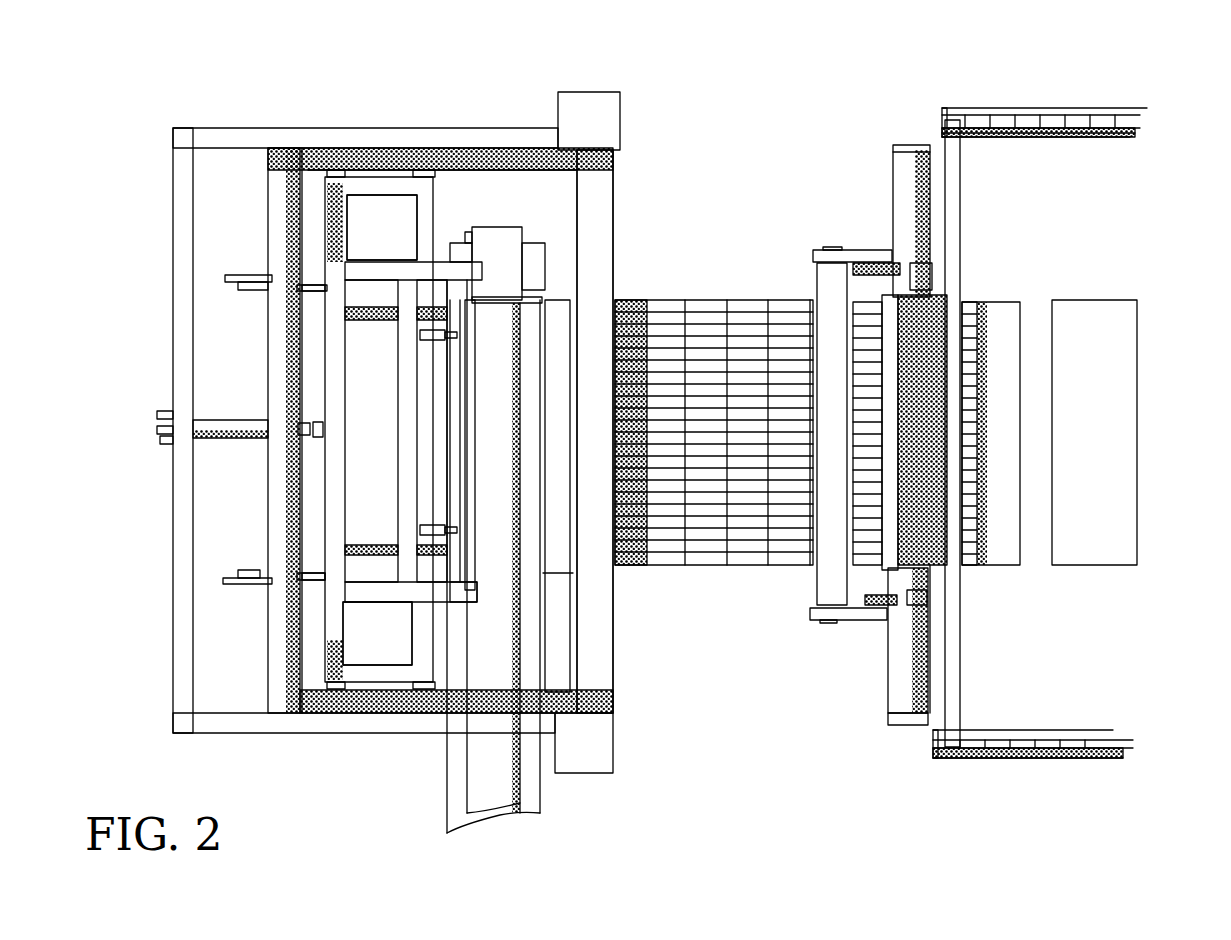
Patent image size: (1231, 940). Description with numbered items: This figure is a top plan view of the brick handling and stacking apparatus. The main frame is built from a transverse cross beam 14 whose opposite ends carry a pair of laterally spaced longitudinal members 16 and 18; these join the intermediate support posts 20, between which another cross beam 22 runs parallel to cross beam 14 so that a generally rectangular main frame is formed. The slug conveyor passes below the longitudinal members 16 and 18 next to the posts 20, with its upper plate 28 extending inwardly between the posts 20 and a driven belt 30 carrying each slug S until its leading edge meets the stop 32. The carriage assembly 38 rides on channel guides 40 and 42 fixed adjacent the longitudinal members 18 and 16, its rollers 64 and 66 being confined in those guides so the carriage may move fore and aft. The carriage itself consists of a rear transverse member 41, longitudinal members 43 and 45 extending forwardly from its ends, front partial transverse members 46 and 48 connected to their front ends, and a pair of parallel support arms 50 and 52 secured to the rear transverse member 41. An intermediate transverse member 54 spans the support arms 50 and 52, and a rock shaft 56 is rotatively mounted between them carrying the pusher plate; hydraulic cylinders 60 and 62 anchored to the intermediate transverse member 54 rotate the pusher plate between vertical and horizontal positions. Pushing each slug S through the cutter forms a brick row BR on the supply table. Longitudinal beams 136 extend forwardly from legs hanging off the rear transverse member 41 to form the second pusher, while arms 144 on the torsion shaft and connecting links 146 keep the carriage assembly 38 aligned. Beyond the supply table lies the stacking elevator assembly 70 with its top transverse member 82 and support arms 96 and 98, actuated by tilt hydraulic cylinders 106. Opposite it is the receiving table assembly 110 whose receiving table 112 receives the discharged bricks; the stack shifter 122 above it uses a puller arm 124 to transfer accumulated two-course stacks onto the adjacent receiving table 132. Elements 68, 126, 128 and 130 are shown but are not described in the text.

The cross beam 14 is at (175, 672).
The longitudinal member 16 is at (225, 132).
The longitudinal member 18 is at (333, 718).
The intermediate support post 20 is at (606, 93).
The cross beam 22 is at (605, 300).
The upper plate 28 is at (550, 545).
The driven belt 30 is at (460, 800).
The stop 32 is at (560, 283).
The carriage assembly 38 is at (470, 190).
The channel guide 40 is at (388, 700).
The rear transverse member 41 is at (325, 360).
The channel guide 42 is at (390, 152).
The longitudinal member 43 is at (398, 192).
The longitudinal member 45 is at (398, 650).
The front partial transverse member 46 is at (412, 618).
The front partial transverse member 48 is at (416, 232).
The support arm 50 is at (443, 265).
The support arm 52 is at (455, 602).
The intermediate transverse member 54 is at (403, 438).
The rock shaft 56 is at (475, 390).
The hydraulic cylinder 60 is at (435, 340).
The hydraulic cylinder 62 is at (430, 520).
The roller 64 is at (352, 150).
The roller 66 is at (485, 155).
The cross bar 68 is at (212, 440).
The stacking elevator assembly 70 is at (832, 210).
The top transverse member 82 is at (825, 285).
The support arm 96 is at (858, 250).
The support arm 98 is at (850, 620).
The tilt hydraulic cylinder 106 is at (875, 265).
The receiving table assembly 110 is at (985, 278).
The receiving table 112 is at (1020, 565).
The stack shifter 122 is at (970, 590).
The puller arm 124 is at (975, 310).
The upper rail 126 is at (963, 195).
The lower rail 128 is at (955, 678).
The rail insulation 130 is at (1040, 115).
The adjacent receiving table 132 is at (1105, 330).
The longitudinal beam 136 is at (358, 302).
The arm 144 is at (230, 279).
The connecting link 146 is at (302, 278).
The slug S is at (620, 305).
The brick row BR is at (680, 302).